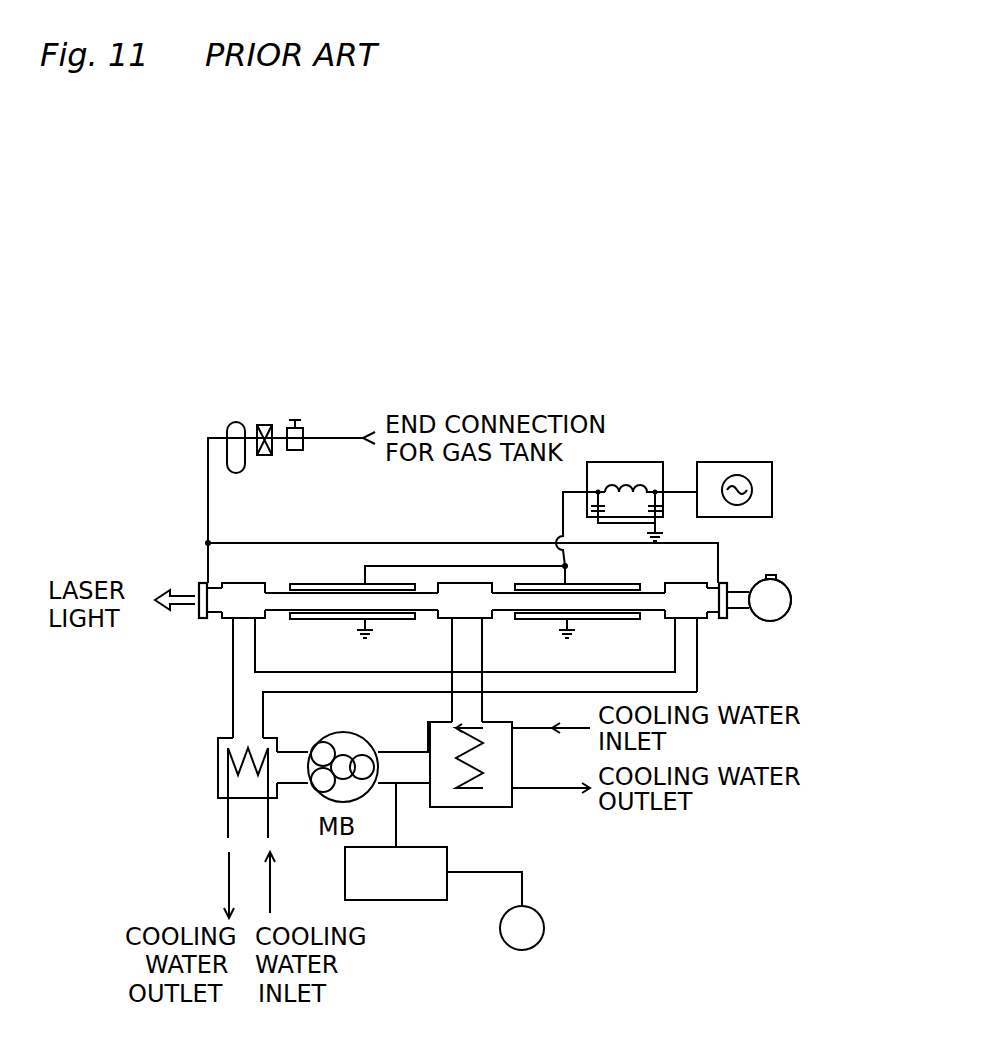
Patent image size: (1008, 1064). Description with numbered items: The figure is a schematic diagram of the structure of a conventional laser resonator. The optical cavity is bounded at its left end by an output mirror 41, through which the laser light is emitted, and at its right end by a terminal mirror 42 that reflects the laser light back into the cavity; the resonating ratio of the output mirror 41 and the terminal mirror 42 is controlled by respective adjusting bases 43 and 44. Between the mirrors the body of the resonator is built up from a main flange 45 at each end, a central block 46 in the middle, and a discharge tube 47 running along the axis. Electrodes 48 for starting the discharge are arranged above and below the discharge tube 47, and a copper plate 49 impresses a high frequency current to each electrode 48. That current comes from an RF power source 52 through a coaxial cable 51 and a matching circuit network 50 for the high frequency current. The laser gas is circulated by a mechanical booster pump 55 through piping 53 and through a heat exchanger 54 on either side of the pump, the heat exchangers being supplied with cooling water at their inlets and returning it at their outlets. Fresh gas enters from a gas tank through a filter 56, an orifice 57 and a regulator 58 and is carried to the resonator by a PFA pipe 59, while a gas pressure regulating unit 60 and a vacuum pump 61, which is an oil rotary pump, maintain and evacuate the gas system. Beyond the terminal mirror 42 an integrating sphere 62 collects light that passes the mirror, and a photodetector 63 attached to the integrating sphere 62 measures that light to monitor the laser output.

The output mirror 41 is at (198, 583).
The terminal mirror 42 is at (727, 583).
The adjusting base 43 is at (210, 618).
The adjusting base 44 is at (720, 618).
The main flange 45 is at (228, 620).
The central block 46 is at (453, 583).
The discharge tube 47 is at (500, 618).
The electrode 48 is at (323, 584).
The copper plate 49 is at (563, 505).
The matching circuit network 50 is at (635, 462).
The coaxial cable 51 is at (680, 490).
The RF power source 52 is at (745, 462).
The piping 53 is at (485, 705).
The heat exchanger 54 is at (218, 795).
The mechanical booster pump 55 is at (365, 735).
The filter 56 is at (231, 422).
The orifice 57 is at (262, 425).
The regulator 58 is at (296, 420).
The PFA pipe 59 is at (208, 500).
The gas pressure regulating unit 60 is at (412, 900).
The vacuum pump 61 is at (522, 950).
The integrating sphere 62 is at (778, 622).
The photodetector 63 is at (775, 578).